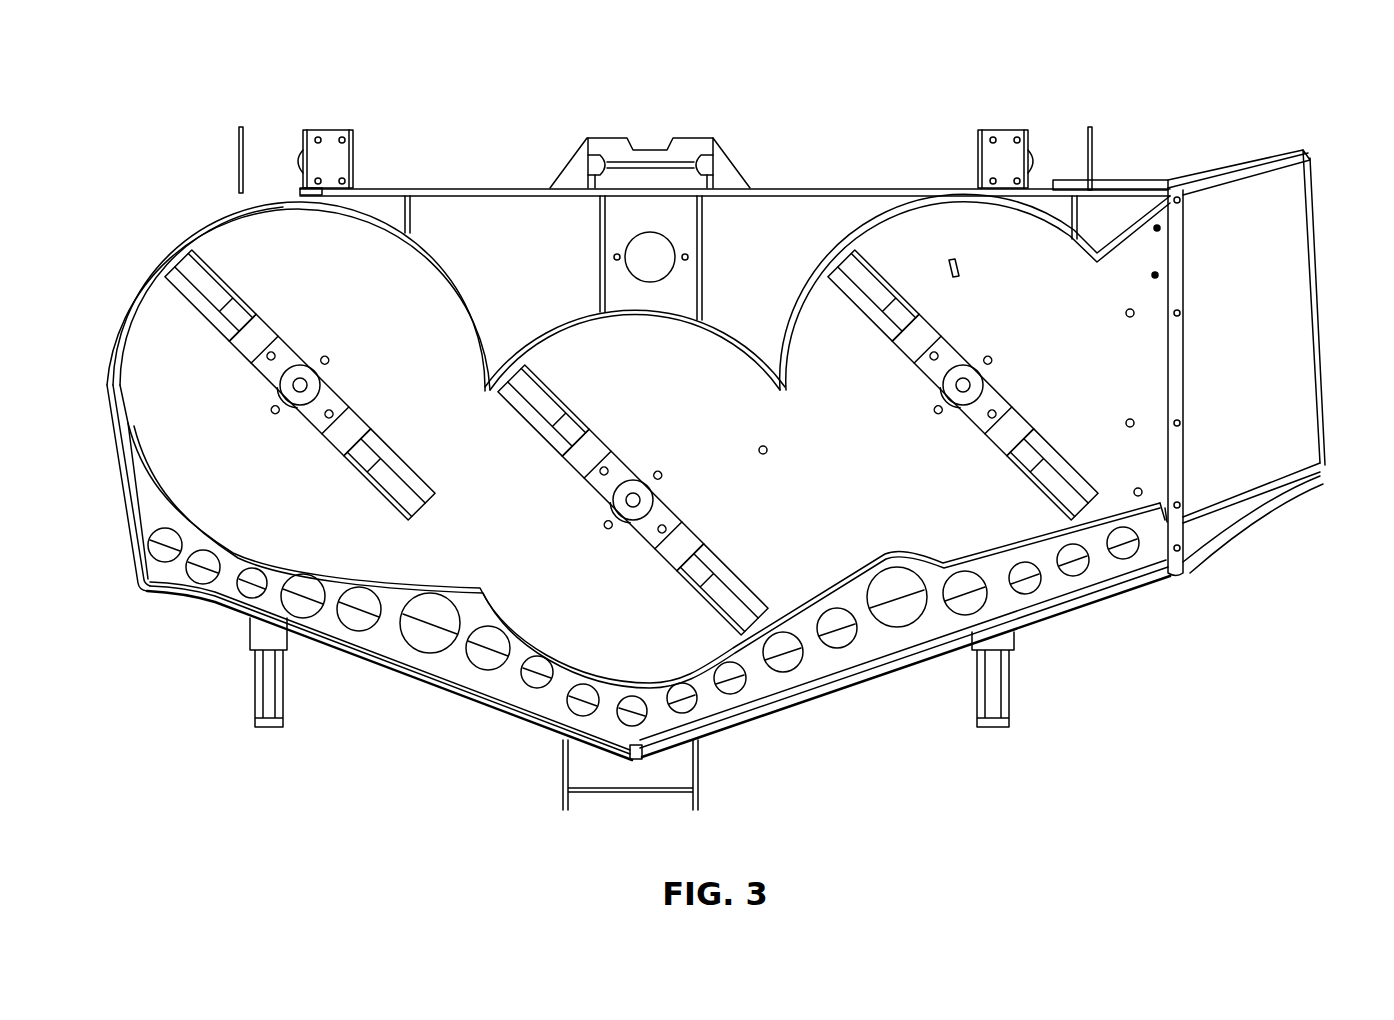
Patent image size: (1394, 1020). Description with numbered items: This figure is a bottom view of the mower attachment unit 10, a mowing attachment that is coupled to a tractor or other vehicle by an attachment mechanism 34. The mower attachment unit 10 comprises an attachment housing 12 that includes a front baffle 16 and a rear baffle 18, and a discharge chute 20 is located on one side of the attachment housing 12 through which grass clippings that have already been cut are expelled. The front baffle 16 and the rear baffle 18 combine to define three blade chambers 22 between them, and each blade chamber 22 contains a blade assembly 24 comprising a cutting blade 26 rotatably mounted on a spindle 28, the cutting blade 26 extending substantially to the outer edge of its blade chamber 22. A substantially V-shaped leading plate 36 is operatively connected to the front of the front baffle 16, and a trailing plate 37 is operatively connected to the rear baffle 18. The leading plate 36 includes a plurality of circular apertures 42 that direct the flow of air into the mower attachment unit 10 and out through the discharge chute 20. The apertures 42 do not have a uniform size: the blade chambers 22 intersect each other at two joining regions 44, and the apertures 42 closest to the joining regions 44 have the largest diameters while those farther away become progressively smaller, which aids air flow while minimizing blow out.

The mower attachment unit 10 is at (152, 115).
The attachment housing 12 is at (408, 190).
The front baffle 16 is at (943, 564).
The rear baffle 18 is at (872, 215).
The discharge chute 20 is at (1298, 493).
The blade chambers 22 is at (243, 533).
The blade assembly 24 is at (273, 334).
The cutting blade 26 is at (367, 458).
The spindle 28 is at (298, 392).
The attachment mechanism 34 is at (350, 128).
The leading plate 36 is at (182, 600).
The trailing plate 37 is at (496, 188).
The apertures 42 is at (158, 550).
The joining regions 44 is at (493, 395).